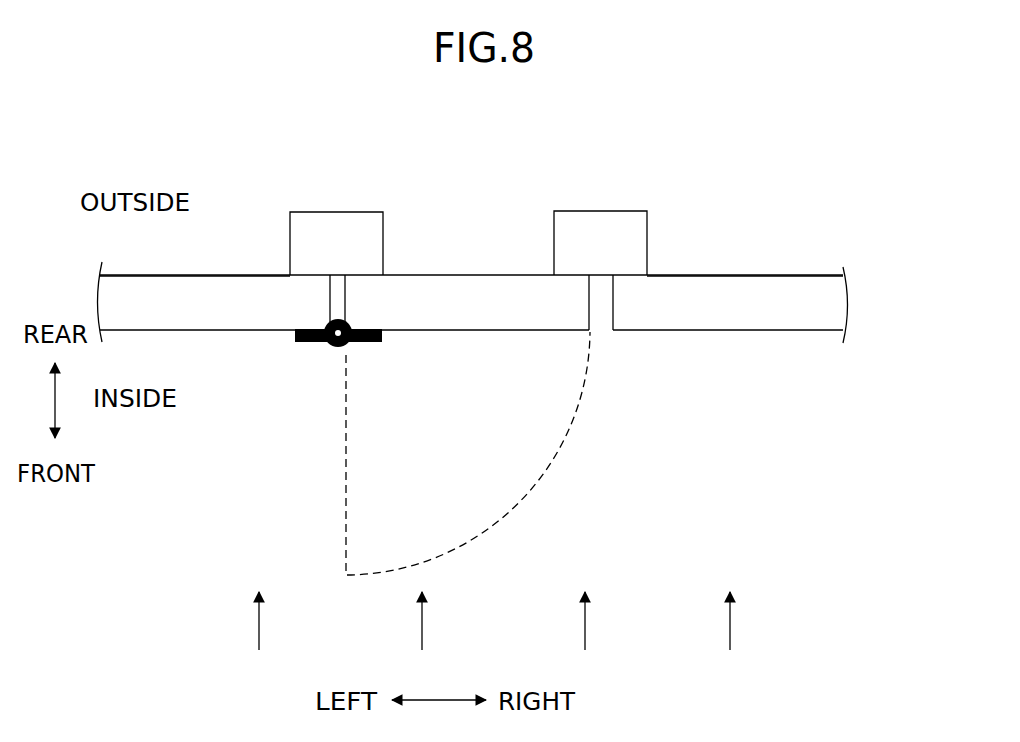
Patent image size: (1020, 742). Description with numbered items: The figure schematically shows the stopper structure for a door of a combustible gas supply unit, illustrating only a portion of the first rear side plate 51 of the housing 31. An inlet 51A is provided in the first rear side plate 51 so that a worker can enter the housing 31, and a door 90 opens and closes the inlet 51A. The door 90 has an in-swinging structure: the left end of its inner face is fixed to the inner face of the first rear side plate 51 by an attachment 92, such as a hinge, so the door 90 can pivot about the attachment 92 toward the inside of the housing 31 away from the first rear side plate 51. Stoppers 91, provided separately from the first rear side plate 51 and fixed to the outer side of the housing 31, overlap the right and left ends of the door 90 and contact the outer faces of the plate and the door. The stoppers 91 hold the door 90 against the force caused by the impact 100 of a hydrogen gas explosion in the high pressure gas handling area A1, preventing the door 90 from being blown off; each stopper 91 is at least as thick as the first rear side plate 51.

The housing 31 is at (858, 237).
The first rear side plate 51 is at (205, 293).
The inlet 51A is at (603, 320).
The door 90 is at (468, 300).
The stopper 91 is at (339, 225).
The attachment 92 is at (305, 345).
The impact 100 is at (261, 622).
The high pressure gas handling area A1 is at (678, 482).